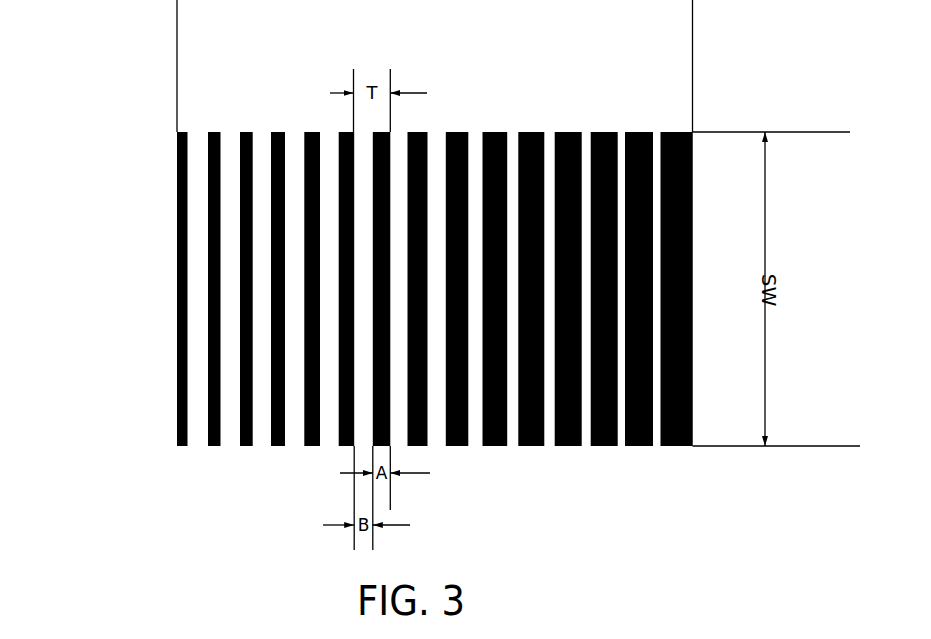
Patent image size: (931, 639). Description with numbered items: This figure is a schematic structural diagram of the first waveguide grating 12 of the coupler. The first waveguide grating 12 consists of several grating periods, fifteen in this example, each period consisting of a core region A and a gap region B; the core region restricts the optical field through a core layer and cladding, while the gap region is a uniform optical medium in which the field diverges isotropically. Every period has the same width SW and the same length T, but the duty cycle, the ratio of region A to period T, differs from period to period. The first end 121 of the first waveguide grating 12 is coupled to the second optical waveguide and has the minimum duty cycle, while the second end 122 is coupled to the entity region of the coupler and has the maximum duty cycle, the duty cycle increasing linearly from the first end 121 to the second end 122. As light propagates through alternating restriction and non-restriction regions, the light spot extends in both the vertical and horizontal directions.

The first waveguide grating 12 is at (692, 48).
The first end of the first waveguide grating 121 is at (177, 380).
The second end of the first waveguide grating 122 is at (663, 447).